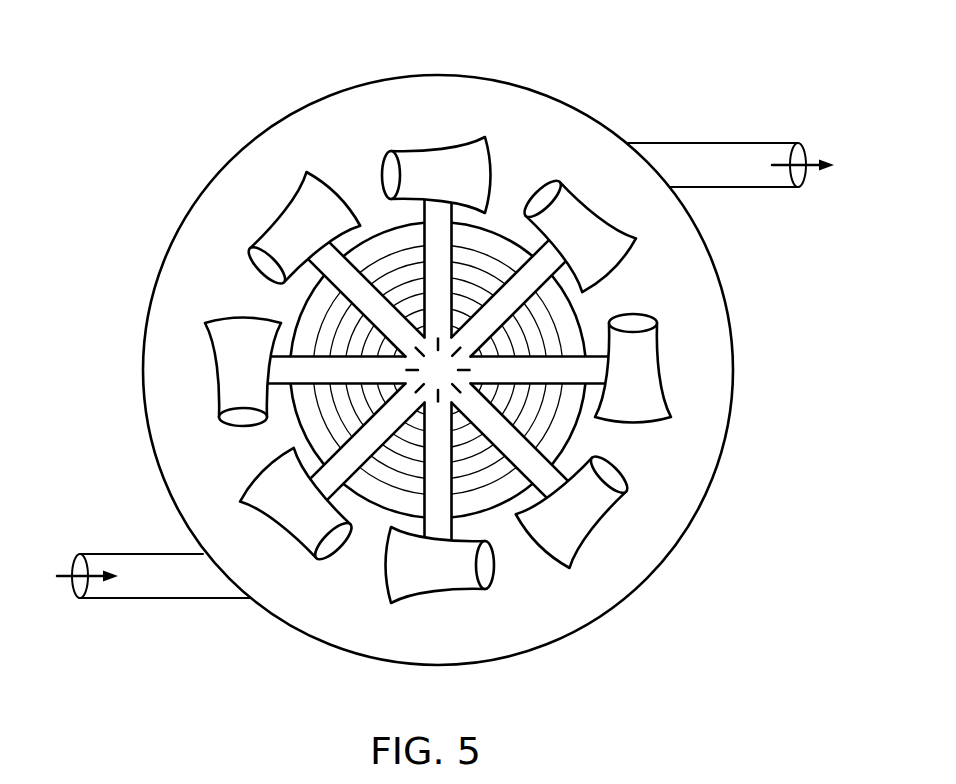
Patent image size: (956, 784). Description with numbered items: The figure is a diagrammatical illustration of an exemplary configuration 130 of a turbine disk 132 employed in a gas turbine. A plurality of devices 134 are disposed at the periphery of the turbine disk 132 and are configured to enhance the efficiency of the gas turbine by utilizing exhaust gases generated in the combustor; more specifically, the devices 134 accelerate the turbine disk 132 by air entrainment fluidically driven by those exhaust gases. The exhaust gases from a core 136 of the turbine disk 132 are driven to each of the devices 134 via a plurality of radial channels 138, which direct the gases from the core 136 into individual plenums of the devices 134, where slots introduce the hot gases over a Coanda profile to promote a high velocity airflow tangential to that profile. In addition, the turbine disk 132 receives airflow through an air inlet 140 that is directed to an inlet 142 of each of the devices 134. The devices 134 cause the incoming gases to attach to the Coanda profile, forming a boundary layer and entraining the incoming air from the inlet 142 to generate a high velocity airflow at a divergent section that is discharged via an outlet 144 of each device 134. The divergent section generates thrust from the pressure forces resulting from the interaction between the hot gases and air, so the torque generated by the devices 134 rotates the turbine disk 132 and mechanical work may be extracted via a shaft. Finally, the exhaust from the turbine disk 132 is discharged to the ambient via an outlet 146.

The configuration 130 is at (167, 47).
The turbine disk 132 is at (578, 316).
The devices 134 is at (486, 175).
The core 136 is at (437, 372).
The radial channels 138 is at (432, 526).
The air inlet 140 is at (148, 585).
The inlet 142 is at (265, 268).
The outlet 144 is at (277, 212).
The outlet 146 is at (758, 172).